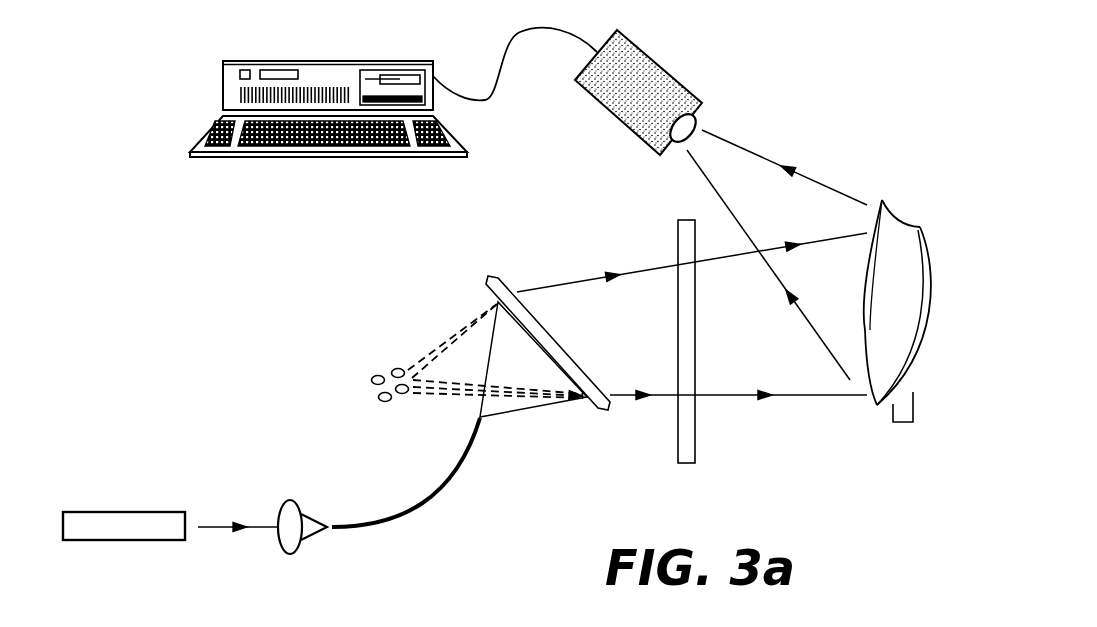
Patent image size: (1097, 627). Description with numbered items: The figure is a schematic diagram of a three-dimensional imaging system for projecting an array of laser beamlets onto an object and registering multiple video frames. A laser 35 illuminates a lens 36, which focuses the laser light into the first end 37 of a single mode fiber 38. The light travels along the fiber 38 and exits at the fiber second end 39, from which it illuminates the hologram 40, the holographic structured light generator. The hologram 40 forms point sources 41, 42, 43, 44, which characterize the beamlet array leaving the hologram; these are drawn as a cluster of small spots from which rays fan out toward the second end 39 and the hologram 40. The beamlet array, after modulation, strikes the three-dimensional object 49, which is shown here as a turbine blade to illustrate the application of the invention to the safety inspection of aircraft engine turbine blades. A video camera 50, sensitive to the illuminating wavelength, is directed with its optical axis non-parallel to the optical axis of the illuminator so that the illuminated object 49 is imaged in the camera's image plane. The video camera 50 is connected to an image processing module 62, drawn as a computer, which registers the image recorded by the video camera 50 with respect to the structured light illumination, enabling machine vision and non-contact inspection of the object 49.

The laser 35 is at (120, 510).
The lens 36 is at (288, 560).
The first end of single mode fiber 37 is at (332, 535).
The single mode fiber 38 is at (432, 513).
The fiber second end 39 is at (483, 420).
The hologram (HSLG) 40 is at (585, 368).
The point source 41 is at (378, 399).
The point source 42 is at (404, 396).
The point source 43 is at (371, 377).
The point source 44 is at (393, 366).
The 3-D object 49 is at (898, 427).
The video camera 50 is at (660, 62).
The image processing module 62 is at (333, 58).